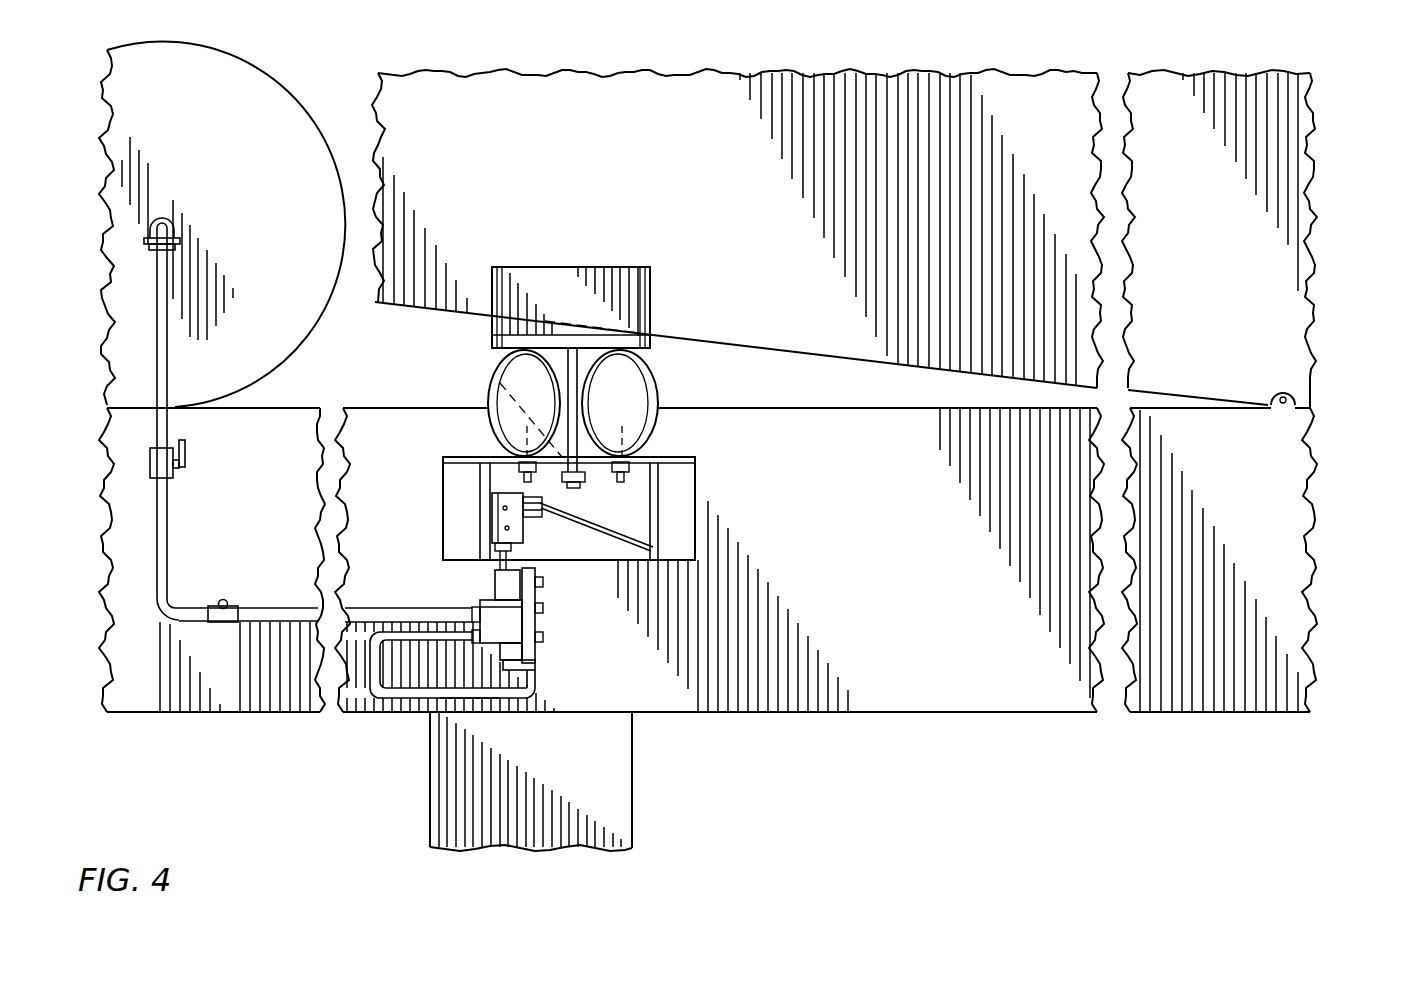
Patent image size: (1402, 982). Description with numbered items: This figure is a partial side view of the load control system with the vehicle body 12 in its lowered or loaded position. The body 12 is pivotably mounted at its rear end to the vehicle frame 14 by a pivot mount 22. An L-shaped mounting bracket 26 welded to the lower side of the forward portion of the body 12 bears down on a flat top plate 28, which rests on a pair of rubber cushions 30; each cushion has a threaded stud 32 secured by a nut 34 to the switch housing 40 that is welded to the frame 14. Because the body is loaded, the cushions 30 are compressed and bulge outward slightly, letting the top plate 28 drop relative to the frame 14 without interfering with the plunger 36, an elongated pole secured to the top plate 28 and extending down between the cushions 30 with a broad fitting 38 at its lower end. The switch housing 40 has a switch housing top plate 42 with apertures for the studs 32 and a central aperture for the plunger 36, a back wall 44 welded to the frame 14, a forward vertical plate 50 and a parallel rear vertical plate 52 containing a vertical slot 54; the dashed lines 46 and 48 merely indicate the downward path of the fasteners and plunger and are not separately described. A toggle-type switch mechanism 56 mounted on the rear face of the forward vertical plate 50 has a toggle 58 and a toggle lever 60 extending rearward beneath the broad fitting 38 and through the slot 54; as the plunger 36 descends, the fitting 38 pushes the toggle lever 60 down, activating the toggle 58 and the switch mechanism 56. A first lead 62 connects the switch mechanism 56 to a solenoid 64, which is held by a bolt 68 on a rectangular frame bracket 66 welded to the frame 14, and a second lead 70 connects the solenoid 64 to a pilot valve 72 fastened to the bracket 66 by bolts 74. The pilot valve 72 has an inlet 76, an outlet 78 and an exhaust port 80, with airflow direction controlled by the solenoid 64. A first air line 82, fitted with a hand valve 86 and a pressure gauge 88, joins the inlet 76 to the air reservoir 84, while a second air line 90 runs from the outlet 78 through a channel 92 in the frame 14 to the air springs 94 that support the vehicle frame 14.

The body 12 is at (1295, 272).
The vehicle frame 14 is at (1297, 600).
The pivot mount 22 is at (1293, 398).
The mounting bracket 26 is at (637, 300).
The top plate 28 is at (493, 345).
The rubber cushions 30 is at (508, 370).
The threaded stud 32 is at (524, 479).
The nut 34 is at (519, 470).
The plunger 36 is at (652, 390).
The broad fitting 38 is at (566, 490).
The switch housing 40 is at (707, 453).
The switch housing top plate 42 is at (460, 458).
The back wall 44 is at (690, 548).
The bolt axis 46 is at (493, 445).
The roller axis 48 is at (490, 392).
The forward vertical plate 50 is at (458, 457).
The rear vertical plate 52 is at (662, 478).
The vertical slot 54 is at (657, 520).
The switch mechanism 56 is at (492, 502).
The toggle 58 is at (537, 518).
The toggle lever 60 is at (643, 562).
The first lead 62 is at (497, 563).
The solenoid 64 is at (528, 590).
The frame bracket 66 is at (533, 657).
The bolt 68 is at (543, 581).
The second lead 70 is at (503, 597).
The pilot valve 72 is at (470, 649).
The bolts 74 is at (543, 640).
The inlet 76 is at (472, 617).
The outlet 78 is at (467, 714).
The exhaust port 80 is at (535, 673).
The first air line 82 is at (263, 608).
The air reservoir 84 is at (202, 58).
The hand valve 86 is at (175, 475).
The pressure gauge 88 is at (233, 606).
The second air line 90 is at (370, 667).
The channel 92 is at (535, 694).
The air springs 94 is at (617, 800).